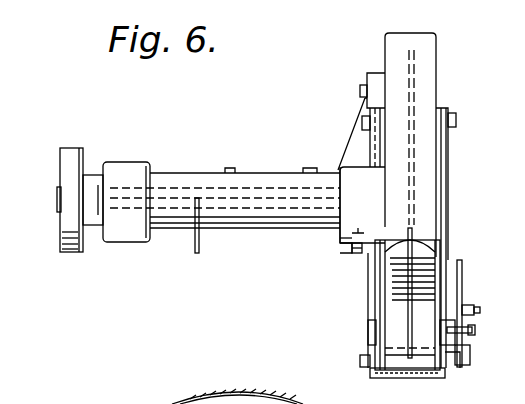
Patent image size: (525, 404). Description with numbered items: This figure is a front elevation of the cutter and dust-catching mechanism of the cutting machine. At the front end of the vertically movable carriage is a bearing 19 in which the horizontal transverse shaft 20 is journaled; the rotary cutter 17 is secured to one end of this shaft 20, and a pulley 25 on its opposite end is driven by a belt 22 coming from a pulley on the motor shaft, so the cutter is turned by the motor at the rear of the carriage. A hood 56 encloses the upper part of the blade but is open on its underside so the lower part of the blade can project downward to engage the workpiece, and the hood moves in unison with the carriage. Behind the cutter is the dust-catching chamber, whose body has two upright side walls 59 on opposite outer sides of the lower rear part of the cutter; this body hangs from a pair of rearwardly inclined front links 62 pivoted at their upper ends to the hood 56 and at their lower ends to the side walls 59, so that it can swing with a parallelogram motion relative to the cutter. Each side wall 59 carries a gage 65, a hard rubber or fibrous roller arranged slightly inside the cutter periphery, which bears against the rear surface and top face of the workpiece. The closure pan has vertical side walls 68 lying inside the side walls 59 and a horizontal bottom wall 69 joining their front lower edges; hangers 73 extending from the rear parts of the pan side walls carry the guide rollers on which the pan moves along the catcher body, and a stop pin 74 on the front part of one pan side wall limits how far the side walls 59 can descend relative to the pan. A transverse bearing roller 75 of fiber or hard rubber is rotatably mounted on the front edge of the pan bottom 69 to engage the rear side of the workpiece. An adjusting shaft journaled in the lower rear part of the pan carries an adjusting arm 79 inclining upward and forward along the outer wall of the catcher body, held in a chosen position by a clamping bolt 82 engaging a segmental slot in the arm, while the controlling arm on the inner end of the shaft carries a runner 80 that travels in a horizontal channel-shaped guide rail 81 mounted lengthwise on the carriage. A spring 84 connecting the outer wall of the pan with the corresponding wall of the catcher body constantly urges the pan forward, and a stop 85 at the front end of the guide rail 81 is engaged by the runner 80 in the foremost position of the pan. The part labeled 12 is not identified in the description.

The pin 12 is at (195, 240).
The rotary cutter 17 is at (410, 355).
The bearing 19 is at (176, 183).
The horizontal transverse shaft 20 is at (58, 198).
The belt 22 is at (68, 253).
The pulley 25 is at (62, 152).
The hood 56 is at (430, 50).
The upright side walls 59 is at (443, 292).
The front links 62 is at (447, 178).
The gage 65 is at (456, 340).
The side walls of the pan 68 is at (409, 292).
The bottom wall 69 is at (440, 258).
The hangers 73 is at (462, 366).
The stop pin 74 is at (450, 365).
The transverse bearing roller 75 is at (436, 365).
The adjusting arm 79 is at (462, 266).
The runner 80 is at (362, 210).
The guide rail 81 is at (339, 243).
The clamping bolt 82 is at (480, 310).
The spring 84 is at (476, 330).
The stop 85 is at (350, 255).